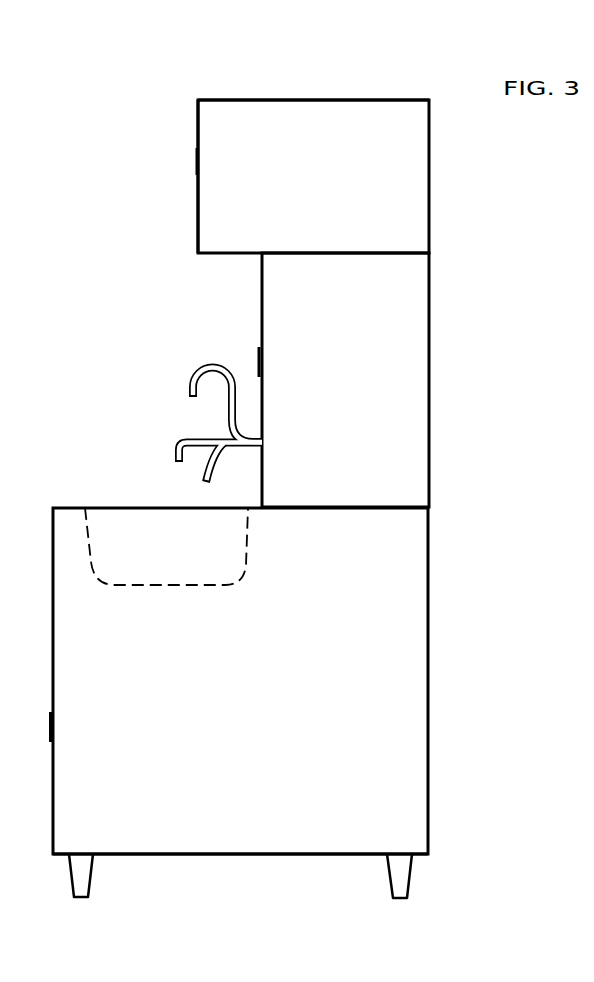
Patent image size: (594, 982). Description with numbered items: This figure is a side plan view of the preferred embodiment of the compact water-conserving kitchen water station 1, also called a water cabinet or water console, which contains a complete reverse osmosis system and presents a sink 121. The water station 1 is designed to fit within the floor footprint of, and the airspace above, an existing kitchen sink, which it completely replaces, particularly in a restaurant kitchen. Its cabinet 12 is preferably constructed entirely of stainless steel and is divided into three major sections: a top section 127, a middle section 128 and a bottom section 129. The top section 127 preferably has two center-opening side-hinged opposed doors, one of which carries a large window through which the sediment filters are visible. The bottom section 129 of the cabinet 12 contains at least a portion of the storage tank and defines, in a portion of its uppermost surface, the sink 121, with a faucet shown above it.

The water station 1 is at (197, 99).
The cabinet 12 is at (197, 132).
The sink 121 is at (158, 588).
The top section 127 is at (351, 182).
The middle section 128 is at (357, 392).
The bottom section 129 is at (294, 676).